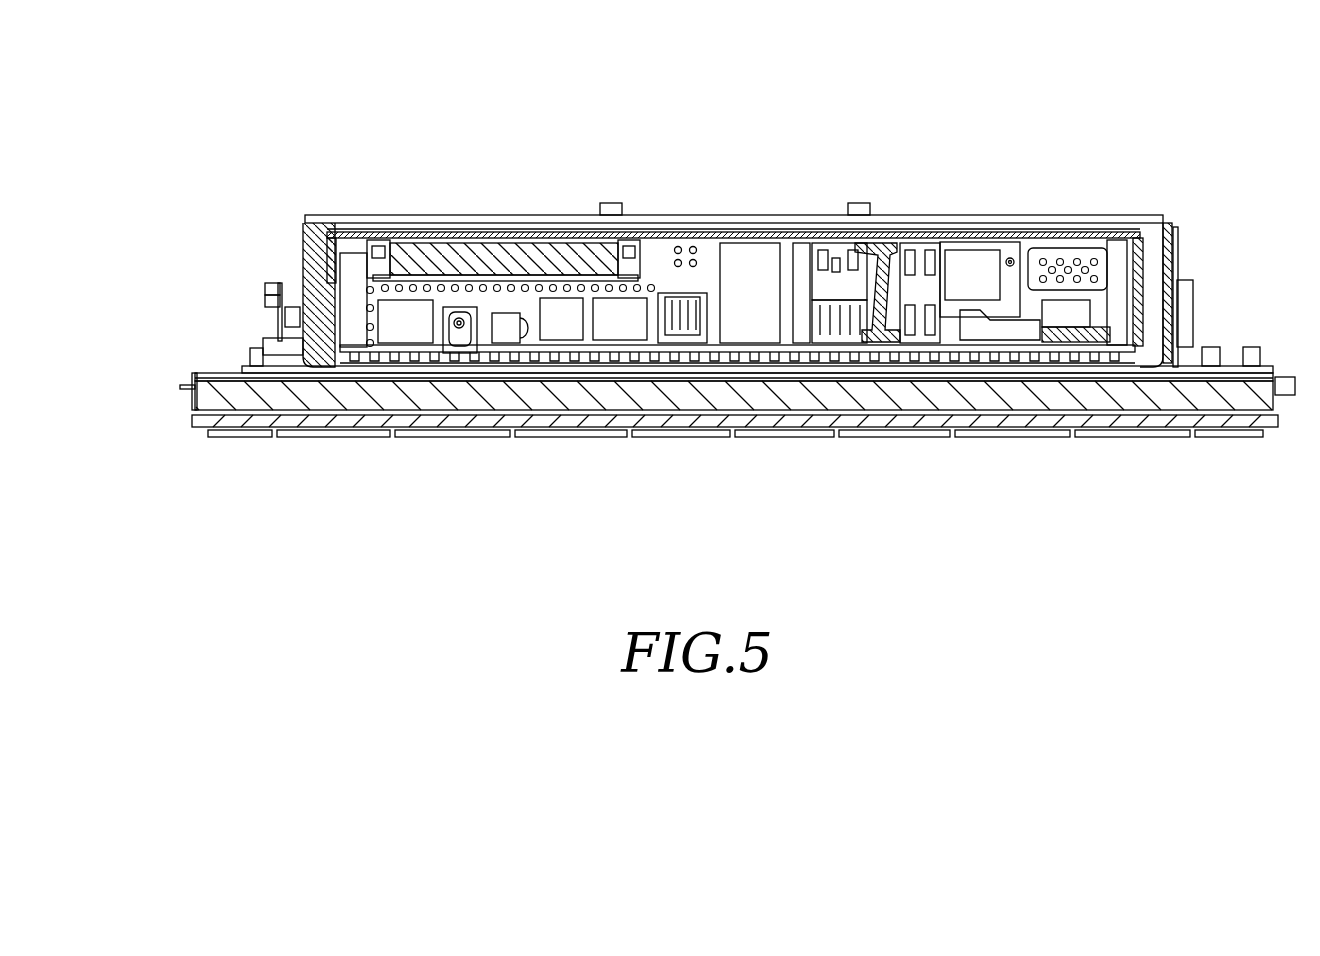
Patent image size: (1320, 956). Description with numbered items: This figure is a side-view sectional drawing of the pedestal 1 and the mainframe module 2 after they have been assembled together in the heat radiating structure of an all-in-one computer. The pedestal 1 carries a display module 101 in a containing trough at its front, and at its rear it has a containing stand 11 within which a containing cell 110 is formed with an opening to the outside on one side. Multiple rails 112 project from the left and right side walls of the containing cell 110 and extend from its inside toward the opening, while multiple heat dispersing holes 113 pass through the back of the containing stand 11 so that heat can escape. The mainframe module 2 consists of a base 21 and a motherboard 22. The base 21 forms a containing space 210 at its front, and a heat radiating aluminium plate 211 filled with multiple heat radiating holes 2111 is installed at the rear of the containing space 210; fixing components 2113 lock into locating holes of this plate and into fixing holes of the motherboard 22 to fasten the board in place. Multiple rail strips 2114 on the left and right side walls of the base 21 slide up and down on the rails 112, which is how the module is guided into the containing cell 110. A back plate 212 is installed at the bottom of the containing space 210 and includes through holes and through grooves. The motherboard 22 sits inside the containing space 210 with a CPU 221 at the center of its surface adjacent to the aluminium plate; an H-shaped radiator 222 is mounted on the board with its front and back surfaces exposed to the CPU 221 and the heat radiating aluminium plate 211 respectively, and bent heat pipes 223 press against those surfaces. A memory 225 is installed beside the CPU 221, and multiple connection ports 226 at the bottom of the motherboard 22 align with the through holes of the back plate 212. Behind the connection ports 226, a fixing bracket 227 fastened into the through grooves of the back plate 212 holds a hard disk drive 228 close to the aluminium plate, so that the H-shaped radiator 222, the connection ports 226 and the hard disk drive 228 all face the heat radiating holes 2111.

The pedestal 1 is at (247, 368).
The display module 101 is at (205, 408).
The containing stand 11 is at (305, 229).
The containing cell 110 is at (303, 258).
The rails 112 is at (278, 275).
The heat dispersing holes 113 is at (1075, 222).
The mainframe module 2 is at (290, 87).
The base 21 is at (979, 218).
The containing space 210 is at (702, 252).
The heat radiating aluminium plate 211 is at (952, 232).
The heat radiating holes 2111 is at (611, 222).
The fixing components 2113 is at (1112, 260).
The rail strips 2114 is at (1150, 288).
The back plate 212 is at (537, 268).
The motherboard 22 is at (680, 297).
The CPU 221 is at (820, 327).
The H-shaped radiator 222 is at (828, 243).
The bent heat pipes 223 is at (885, 245).
The memory 225 is at (1068, 315).
The connection ports 226 is at (457, 307).
The fixing bracket 227 is at (333, 237).
The hard disk drive 228 is at (493, 263).